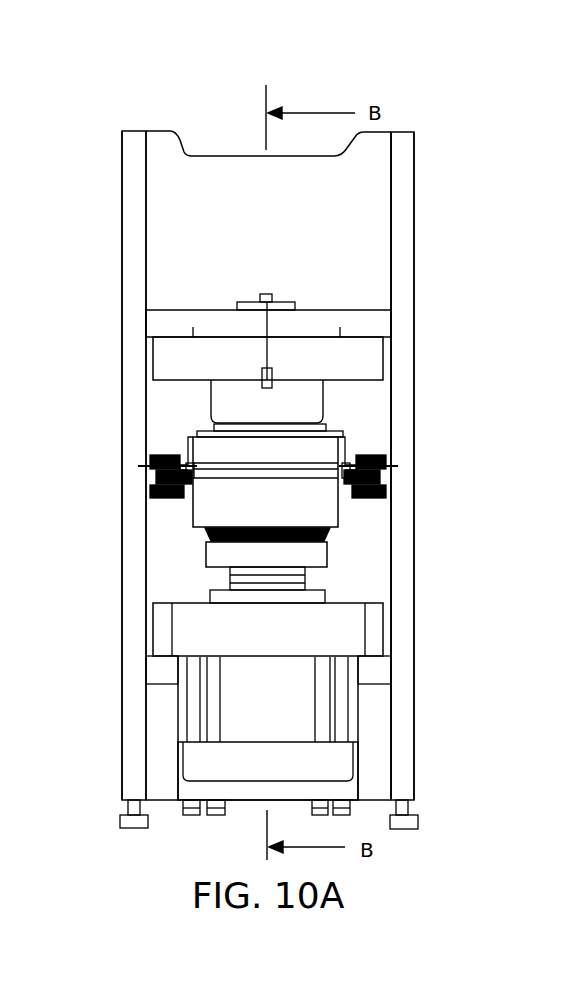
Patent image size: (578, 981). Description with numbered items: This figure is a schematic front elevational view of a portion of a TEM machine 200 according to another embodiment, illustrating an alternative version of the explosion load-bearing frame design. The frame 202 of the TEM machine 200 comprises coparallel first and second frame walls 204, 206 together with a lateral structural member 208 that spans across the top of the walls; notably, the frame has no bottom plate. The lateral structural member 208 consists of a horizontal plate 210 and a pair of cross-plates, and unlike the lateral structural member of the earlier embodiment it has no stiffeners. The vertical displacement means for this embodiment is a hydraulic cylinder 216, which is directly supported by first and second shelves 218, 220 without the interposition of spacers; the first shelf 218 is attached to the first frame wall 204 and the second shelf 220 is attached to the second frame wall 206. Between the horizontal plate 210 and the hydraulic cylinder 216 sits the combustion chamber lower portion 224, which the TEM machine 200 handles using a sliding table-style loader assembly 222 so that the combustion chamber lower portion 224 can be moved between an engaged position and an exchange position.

The TEM machine 200 is at (466, 151).
The frame 202 is at (415, 227).
The first frame wall 204 is at (137, 138).
The second frame wall 206 is at (400, 284).
The lateral structural member 208 is at (178, 145).
The horizontal plate 210 is at (380, 331).
The hydraulic cylinder 216 is at (383, 628).
The first shelf 218 is at (147, 672).
The second shelf 220 is at (390, 671).
The sliding table-style loader assembly 222 is at (375, 455).
The combustion chamber lower portion 224 is at (340, 512).